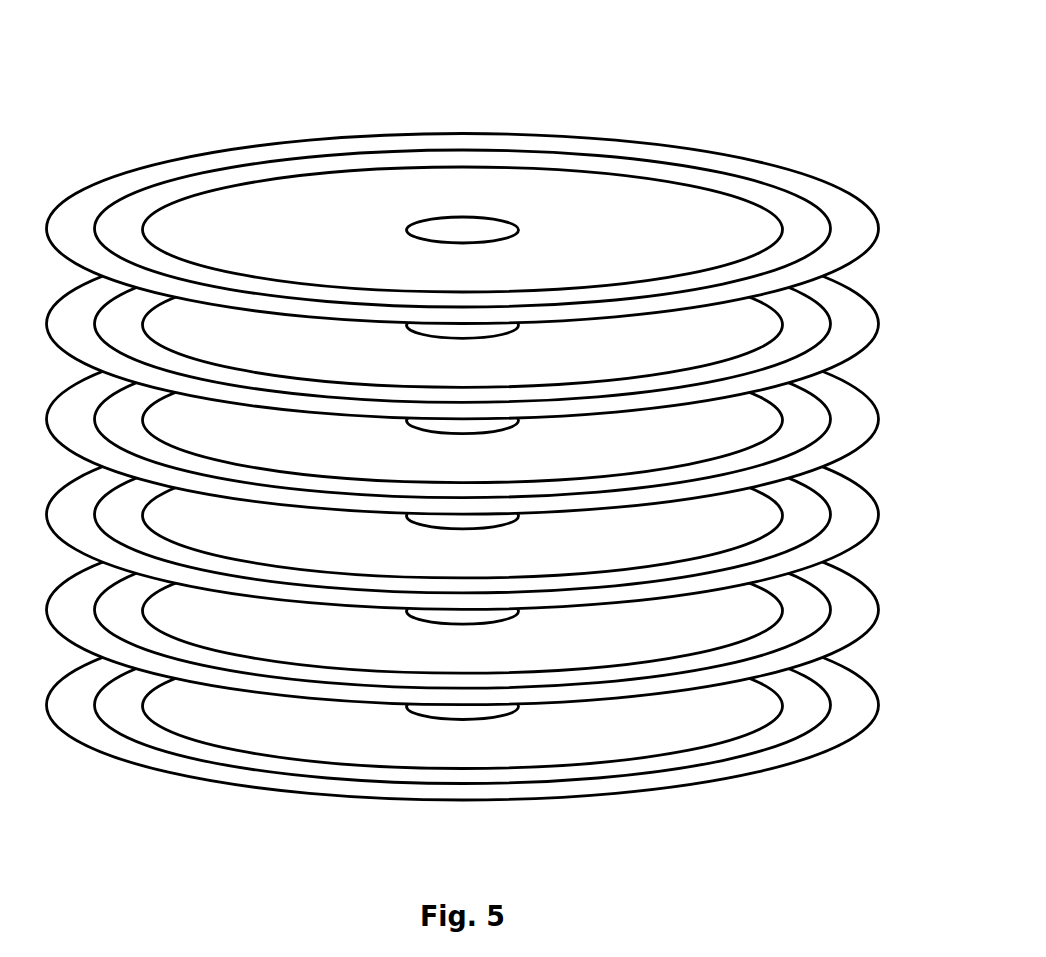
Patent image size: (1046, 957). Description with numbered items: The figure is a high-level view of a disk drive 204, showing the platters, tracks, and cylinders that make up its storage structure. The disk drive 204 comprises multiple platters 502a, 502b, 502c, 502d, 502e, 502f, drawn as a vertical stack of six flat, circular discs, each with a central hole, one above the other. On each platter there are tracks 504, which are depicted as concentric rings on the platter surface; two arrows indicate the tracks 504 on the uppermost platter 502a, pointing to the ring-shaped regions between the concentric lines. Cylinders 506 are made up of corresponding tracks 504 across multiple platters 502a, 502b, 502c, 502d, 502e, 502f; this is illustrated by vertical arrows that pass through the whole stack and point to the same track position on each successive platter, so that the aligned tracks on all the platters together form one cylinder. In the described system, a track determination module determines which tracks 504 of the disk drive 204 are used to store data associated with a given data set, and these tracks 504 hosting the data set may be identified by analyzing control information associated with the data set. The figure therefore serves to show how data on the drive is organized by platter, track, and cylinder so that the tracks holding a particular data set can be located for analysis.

The disk drive 204 is at (256, 63).
The platter 502a is at (350, 234).
The platter 502b is at (350, 329).
The platter 502c is at (350, 425).
The platter 502d is at (350, 520).
The platter 502e is at (350, 615).
The platter 502f is at (350, 710).
The tracks 504 is at (795, 195).
The cylinders 506 is at (113, 253).